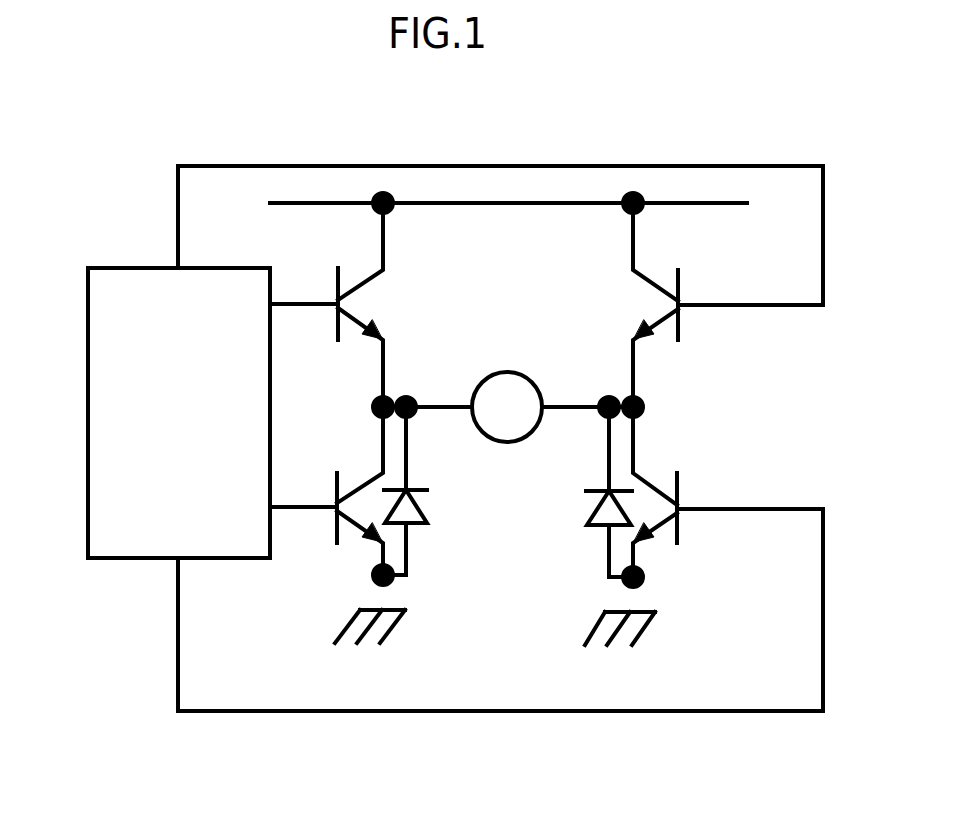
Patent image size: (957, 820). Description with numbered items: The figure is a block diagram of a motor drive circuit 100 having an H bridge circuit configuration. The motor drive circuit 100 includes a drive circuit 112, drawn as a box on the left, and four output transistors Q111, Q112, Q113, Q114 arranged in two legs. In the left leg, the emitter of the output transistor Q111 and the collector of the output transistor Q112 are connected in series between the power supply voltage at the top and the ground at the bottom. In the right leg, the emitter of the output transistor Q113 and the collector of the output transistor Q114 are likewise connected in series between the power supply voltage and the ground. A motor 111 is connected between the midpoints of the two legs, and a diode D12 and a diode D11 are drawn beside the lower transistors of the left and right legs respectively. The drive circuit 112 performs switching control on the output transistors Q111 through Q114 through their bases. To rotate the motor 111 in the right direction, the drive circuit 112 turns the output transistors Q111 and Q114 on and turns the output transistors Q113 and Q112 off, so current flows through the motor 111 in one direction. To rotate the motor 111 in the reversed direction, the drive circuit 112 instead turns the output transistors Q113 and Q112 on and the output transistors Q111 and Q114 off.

The motor drive circuit 100 is at (815, 88).
The motor 111 is at (507, 372).
The drive circuit 112 is at (137, 268).
The output transistor Q111 is at (350, 305).
The output transistor Q112 is at (340, 491).
The output transistor Q113 is at (728, 305).
The output transistor Q114 is at (728, 492).
The diode D11 is at (599, 492).
The diode D12 is at (420, 491).